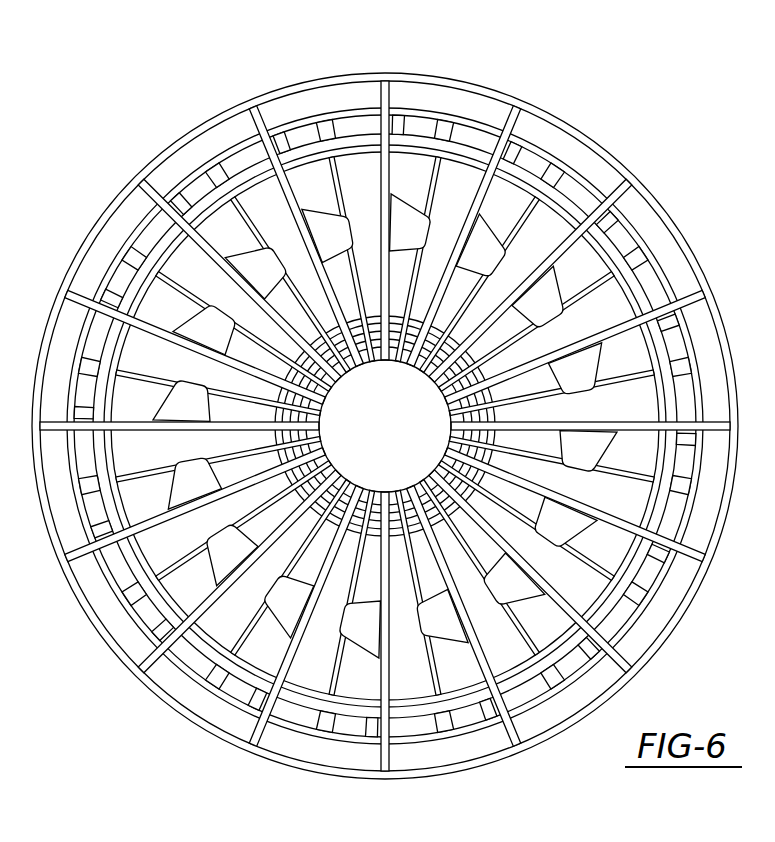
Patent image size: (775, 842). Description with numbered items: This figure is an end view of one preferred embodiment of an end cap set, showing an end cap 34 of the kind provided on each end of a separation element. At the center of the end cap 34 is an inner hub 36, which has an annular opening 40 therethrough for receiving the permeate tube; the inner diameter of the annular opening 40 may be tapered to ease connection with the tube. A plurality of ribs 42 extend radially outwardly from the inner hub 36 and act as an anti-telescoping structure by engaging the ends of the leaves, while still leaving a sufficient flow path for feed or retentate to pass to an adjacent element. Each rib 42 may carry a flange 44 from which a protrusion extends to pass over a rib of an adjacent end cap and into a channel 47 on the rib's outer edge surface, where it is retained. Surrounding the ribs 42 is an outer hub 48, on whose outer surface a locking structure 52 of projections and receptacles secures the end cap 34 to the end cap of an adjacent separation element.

The end cap 34 is at (118, 182).
The inner hub 36 is at (294, 350).
The annular opening 40 is at (448, 433).
The ribs 42 is at (603, 173).
The flange 44 is at (402, 212).
The channel 47 is at (625, 296).
The outer hub 48 is at (222, 140).
The locking structure 52 is at (626, 227).